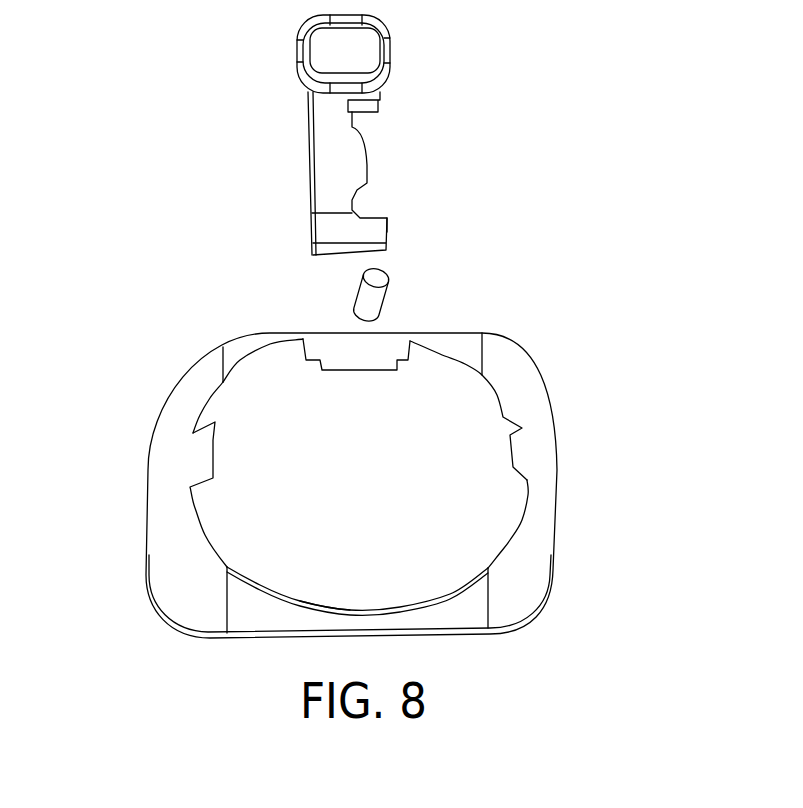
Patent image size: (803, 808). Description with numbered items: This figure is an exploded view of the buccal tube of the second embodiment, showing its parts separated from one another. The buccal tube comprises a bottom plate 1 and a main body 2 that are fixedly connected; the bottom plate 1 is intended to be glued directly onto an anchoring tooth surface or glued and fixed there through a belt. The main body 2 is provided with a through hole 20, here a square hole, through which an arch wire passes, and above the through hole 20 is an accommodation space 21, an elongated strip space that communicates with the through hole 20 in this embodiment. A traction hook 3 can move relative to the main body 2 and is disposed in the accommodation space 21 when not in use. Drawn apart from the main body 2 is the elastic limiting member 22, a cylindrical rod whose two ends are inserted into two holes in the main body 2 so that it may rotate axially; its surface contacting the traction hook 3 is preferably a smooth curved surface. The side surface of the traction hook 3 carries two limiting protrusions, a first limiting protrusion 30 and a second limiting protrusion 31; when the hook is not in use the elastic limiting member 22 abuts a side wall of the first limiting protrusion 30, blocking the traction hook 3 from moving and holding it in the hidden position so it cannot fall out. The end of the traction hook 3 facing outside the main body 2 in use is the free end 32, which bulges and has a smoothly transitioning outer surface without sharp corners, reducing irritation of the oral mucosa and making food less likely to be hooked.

The bottom plate 1 is at (192, 578).
The main body 2 is at (430, 507).
The through hole 20 is at (513, 450).
The accommodation space 21 is at (386, 362).
The elastic limiting member 22 is at (377, 292).
The traction hook 3 is at (275, 129).
The first limiting protrusion 30 is at (358, 162).
The second limiting protrusion 31 is at (377, 232).
The free end 32 is at (348, 53).